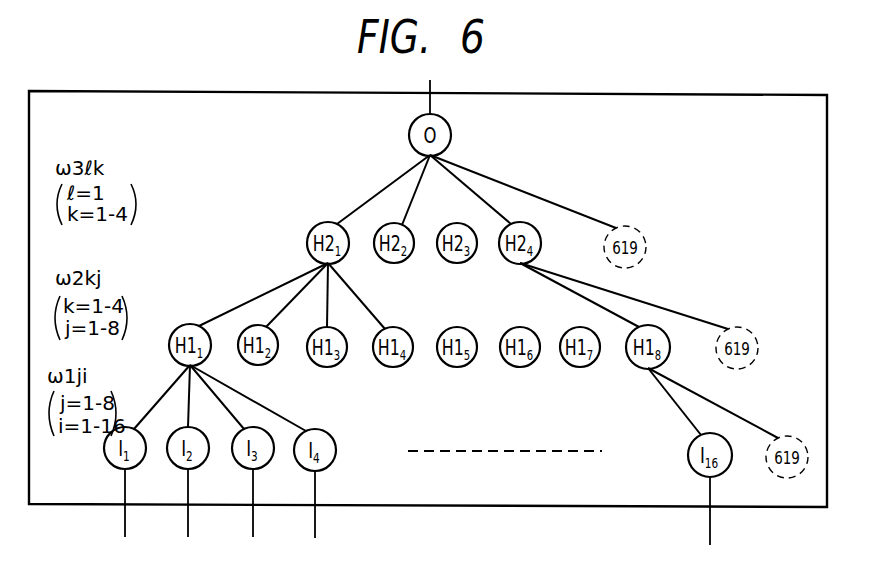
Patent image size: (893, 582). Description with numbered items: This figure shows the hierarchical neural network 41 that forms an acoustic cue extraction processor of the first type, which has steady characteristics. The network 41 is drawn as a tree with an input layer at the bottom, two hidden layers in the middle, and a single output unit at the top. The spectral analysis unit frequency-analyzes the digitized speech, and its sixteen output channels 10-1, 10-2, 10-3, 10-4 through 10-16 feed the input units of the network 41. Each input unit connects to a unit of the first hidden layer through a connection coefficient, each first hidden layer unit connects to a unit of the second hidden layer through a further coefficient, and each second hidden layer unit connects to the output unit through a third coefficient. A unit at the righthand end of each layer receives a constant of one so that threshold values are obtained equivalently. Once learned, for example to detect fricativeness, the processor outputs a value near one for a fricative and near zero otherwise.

The hierarchical neural network (tree network) 41 is at (428, 272).
The output channel 10-1 is at (126, 520).
The output channel 10-2 is at (189, 520).
The output channel 10-3 is at (254, 520).
The output channel 10-4 is at (316, 522).
The output channel 10-16 is at (711, 527).